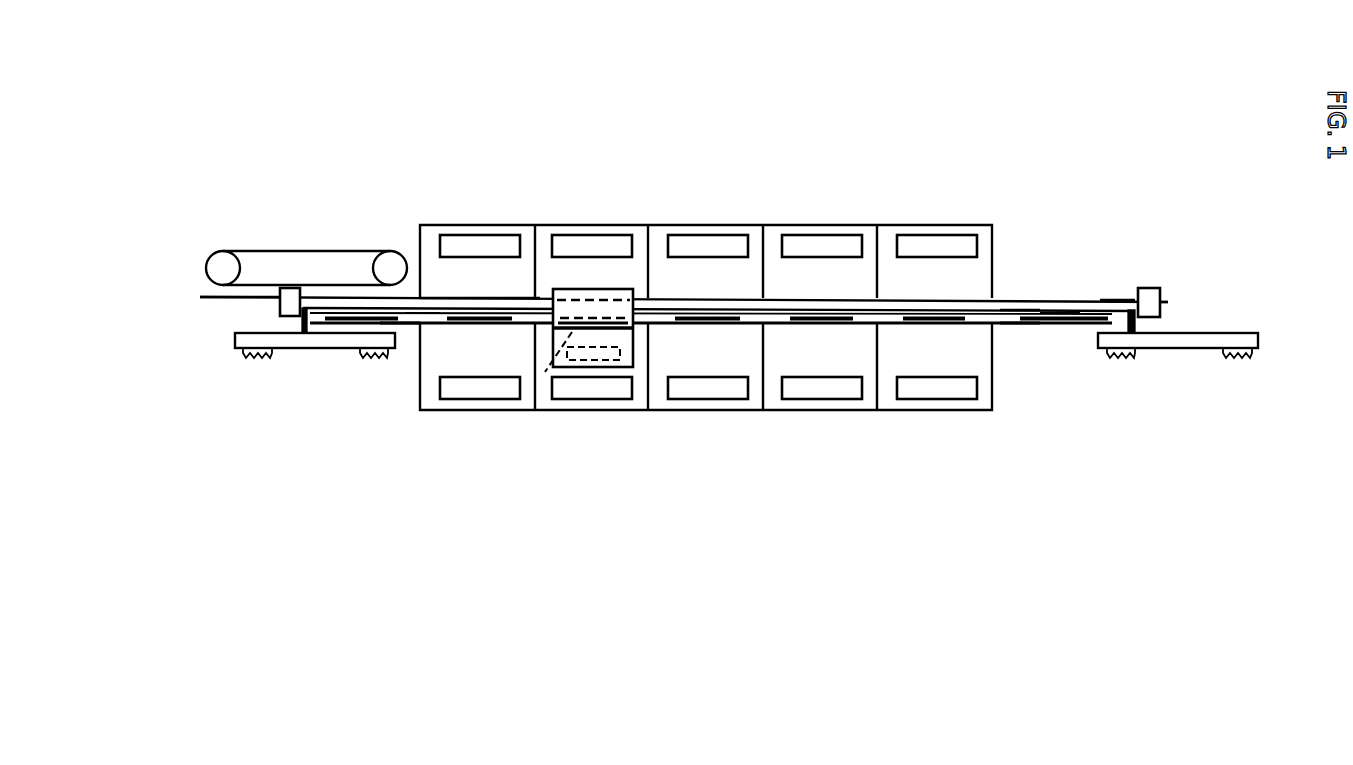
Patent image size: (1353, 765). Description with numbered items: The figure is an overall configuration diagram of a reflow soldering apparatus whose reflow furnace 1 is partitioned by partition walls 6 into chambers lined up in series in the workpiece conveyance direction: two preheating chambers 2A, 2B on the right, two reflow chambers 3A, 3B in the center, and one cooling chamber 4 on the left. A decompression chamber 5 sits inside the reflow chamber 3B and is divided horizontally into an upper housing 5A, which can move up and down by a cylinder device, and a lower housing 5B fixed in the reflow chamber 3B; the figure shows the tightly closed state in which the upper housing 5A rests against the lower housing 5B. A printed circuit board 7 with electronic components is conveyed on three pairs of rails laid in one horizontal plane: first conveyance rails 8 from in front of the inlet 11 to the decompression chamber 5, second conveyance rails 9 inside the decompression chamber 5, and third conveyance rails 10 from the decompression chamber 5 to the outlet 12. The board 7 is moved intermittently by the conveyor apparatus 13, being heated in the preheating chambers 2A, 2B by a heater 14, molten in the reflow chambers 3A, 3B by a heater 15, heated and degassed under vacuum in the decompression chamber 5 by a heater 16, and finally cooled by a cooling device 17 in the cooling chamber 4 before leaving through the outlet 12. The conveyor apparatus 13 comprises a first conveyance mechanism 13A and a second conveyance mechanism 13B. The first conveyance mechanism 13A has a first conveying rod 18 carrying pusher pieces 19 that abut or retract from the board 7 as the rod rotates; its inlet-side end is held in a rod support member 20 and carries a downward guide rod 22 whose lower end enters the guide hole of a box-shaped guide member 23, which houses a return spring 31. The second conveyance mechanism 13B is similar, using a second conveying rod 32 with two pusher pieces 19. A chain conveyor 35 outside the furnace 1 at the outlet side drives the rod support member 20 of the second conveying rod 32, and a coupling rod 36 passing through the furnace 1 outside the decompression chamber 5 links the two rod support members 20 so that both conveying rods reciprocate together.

The reflow furnace 1 is at (748, 222).
The first preheating chamber 2A is at (927, 259).
The second preheating chamber 2B is at (822, 277).
The first-stage reflow chamber 3A is at (692, 259).
The second-stage reflow chamber 3B is at (596, 277).
The cooling chamber 4 is at (480, 277).
The decompression chamber 5 is at (639, 330).
The upper housing 5A is at (552, 288).
The lower housing 5B is at (656, 406).
The partition wall 6 is at (882, 238).
The printed circuit board 7 is at (1049, 313).
The first conveyance rails 8 is at (1017, 325).
The second conveyance rails 9 is at (545, 374).
The third conveyance rails 10 is at (402, 326).
The inlet 11 is at (711, 336).
The outlet 12 is at (420, 326).
The conveyor apparatus 13 is at (692, 253).
The first conveyance mechanism 13A is at (1180, 297).
The second conveyance mechanism 13B is at (247, 303).
The heater 14 is at (812, 259).
The heater 15 is at (589, 259).
The heater 16 is at (583, 353).
The cooling device 17 is at (467, 259).
The first conveying rod 18 is at (1011, 308).
The pusher piece 19 is at (547, 312).
The rod support member 20 is at (205, 296).
The guide rod 22 is at (302, 323).
The guide member 23 is at (322, 354).
The return spring 31 is at (252, 360).
The second conveying rod 32 is at (455, 297).
The chain conveyor 35 is at (274, 247).
The coupling rod 36 is at (1117, 301).